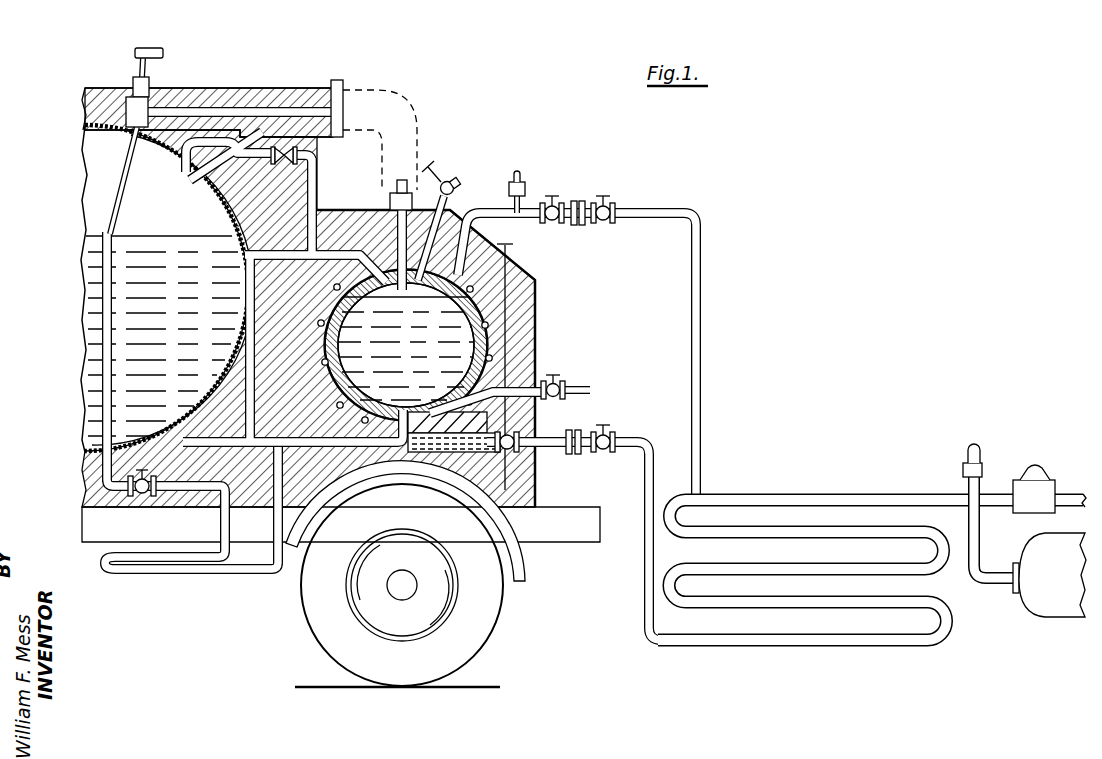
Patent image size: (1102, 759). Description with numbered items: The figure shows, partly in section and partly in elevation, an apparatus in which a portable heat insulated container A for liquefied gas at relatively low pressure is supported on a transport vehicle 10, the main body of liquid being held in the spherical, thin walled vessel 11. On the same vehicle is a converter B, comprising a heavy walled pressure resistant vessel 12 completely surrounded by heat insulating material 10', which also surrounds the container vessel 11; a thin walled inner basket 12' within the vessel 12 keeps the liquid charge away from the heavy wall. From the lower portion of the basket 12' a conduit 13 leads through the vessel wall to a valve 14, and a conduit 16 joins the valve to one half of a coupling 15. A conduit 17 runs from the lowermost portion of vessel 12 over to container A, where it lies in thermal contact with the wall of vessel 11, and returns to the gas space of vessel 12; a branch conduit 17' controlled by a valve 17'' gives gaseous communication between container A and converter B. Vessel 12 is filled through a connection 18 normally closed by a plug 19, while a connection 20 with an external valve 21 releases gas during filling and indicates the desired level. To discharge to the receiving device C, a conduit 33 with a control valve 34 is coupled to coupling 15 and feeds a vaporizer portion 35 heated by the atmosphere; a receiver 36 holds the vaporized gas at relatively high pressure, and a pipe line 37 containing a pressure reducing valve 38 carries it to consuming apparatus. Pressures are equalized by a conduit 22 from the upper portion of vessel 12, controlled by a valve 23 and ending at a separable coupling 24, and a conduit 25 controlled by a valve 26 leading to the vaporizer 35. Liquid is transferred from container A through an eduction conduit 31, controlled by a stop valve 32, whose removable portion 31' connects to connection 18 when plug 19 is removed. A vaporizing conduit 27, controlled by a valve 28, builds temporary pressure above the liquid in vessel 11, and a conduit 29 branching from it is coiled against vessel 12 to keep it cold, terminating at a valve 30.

The transport vehicle 10 is at (304, 507).
The heat insulating material 10' is at (318, 297).
The thin walled vessel 11 is at (105, 133).
The pressure resistant vessel 12 is at (453, 346).
The inner vessel or basket 12' is at (479, 249).
The conduit 13 is at (484, 478).
The valve 14 is at (518, 466).
The coupling 15 is at (575, 430).
The conduit 16 is at (550, 447).
The conduit 17 is at (293, 384).
The branch conduit 17' is at (326, 99).
The valve 17'' is at (289, 111).
The connection 18 is at (372, 214).
The plug 19 is at (393, 193).
The connection 20 is at (443, 200).
The valve 21 is at (449, 182).
The conduit 22 is at (496, 212).
The valve 23 is at (553, 205).
The separable coupling 24 is at (577, 226).
The conduit 25 is at (660, 213).
The valve 26 is at (604, 204).
The vaporizing conduit 27 is at (138, 574).
The valve 28 is at (140, 494).
The conduit 29 is at (540, 364).
The valve 30 is at (568, 386).
The eduction conduit 31 is at (240, 74).
The removable portion 31' is at (375, 110).
The stop valve 32 is at (127, 98).
The conduit 33 is at (645, 558).
The control valve 34 is at (604, 450).
The vaporizer portion 35 is at (812, 647).
The receiver 36 is at (1058, 618).
The pipe line 37 is at (1062, 494).
The pressure reducing valve 38 is at (1018, 472).
The portable container A is at (82, 302).
The converter B is at (546, 322).
The receiving device C is at (936, 650).